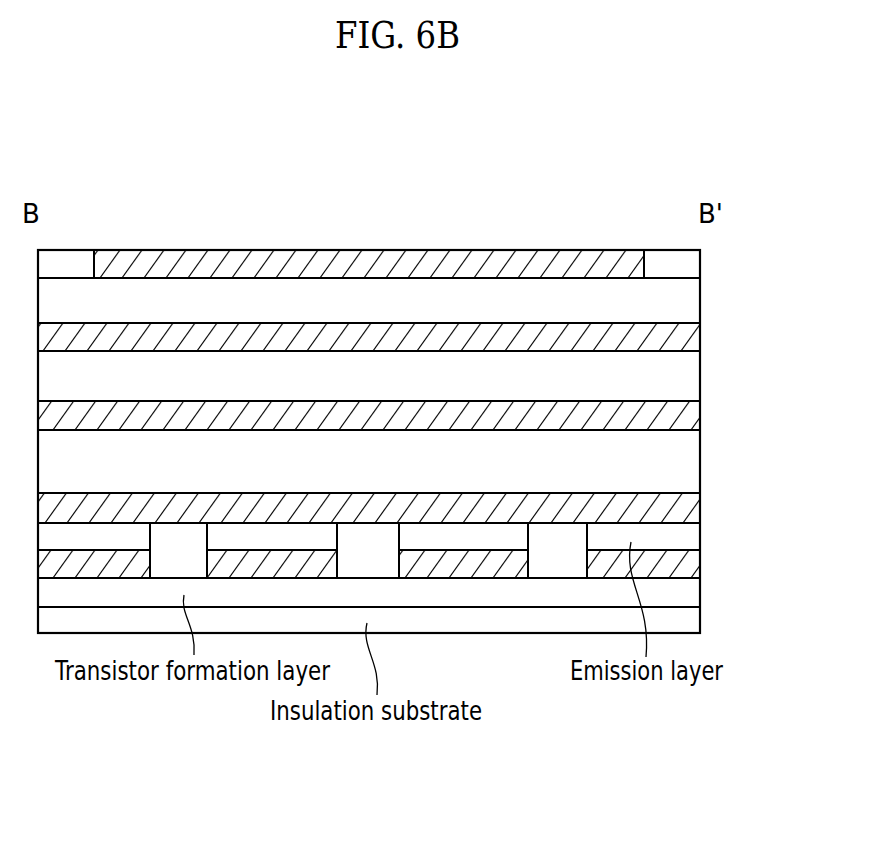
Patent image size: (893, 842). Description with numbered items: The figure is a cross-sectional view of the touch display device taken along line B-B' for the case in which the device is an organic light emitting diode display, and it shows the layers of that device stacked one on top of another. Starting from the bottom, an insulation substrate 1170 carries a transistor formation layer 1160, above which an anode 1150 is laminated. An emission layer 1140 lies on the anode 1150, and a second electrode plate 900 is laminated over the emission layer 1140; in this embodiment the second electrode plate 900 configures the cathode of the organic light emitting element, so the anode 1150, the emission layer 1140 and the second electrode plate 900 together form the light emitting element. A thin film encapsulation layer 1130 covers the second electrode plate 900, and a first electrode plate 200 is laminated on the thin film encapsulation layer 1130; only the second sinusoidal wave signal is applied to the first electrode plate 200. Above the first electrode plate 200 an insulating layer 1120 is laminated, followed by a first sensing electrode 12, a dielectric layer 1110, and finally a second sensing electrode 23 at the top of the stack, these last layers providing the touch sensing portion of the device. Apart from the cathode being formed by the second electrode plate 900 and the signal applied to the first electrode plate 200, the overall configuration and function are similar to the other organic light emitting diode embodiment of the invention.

The second sensing electrode 23 is at (510, 250).
The dielectric layer 1110 is at (700, 303).
The first sensing electrode 12 is at (700, 341).
The insulating layer 1120 is at (700, 383).
The first electrode plate 200 is at (700, 420).
The thin film encapsulation layer 1130 is at (700, 464).
The second electrode plate 900 is at (700, 510).
The emission layer 1140 is at (700, 536).
The anode 1150 is at (700, 565).
The transistor formation layer 1160 is at (700, 593).
The insulation substrate 1170 is at (700, 620).